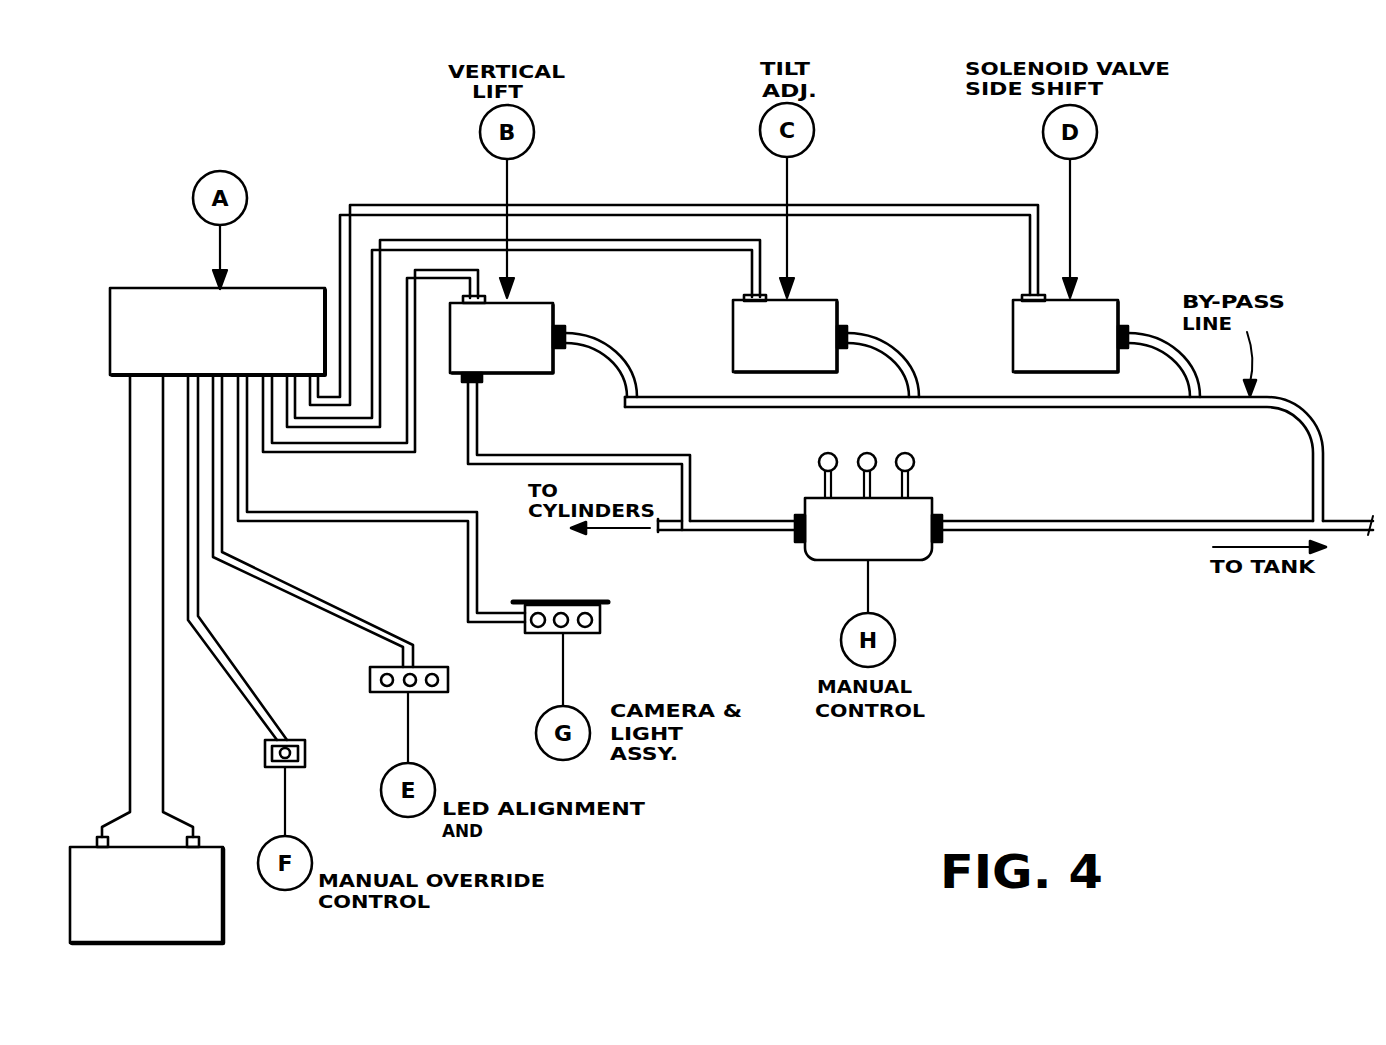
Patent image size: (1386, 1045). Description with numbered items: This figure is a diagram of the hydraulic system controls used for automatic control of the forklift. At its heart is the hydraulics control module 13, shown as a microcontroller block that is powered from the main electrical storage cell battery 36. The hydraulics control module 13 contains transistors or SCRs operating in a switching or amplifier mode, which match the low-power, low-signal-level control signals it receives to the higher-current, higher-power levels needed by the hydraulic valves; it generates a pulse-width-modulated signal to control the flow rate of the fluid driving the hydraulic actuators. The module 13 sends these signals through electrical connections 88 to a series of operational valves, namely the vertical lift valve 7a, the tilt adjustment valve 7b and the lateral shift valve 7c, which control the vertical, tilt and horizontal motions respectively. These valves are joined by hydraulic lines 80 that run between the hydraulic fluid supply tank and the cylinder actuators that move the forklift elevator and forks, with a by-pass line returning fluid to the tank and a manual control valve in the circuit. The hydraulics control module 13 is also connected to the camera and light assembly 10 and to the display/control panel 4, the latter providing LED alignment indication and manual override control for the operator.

The hydraulics control module 13 is at (120, 360).
The main electrical storage cell battery 36 is at (82, 858).
The display/control panel 4 is at (450, 680).
The camera and light assembly 10 is at (600, 621).
The vertical lift valve 7a is at (532, 308).
The tilt adjustment valve 7b is at (817, 310).
The lateral shift valve 7c is at (1090, 312).
The electrical connections 88 is at (722, 205).
The hydraulic lines 80 is at (968, 397).